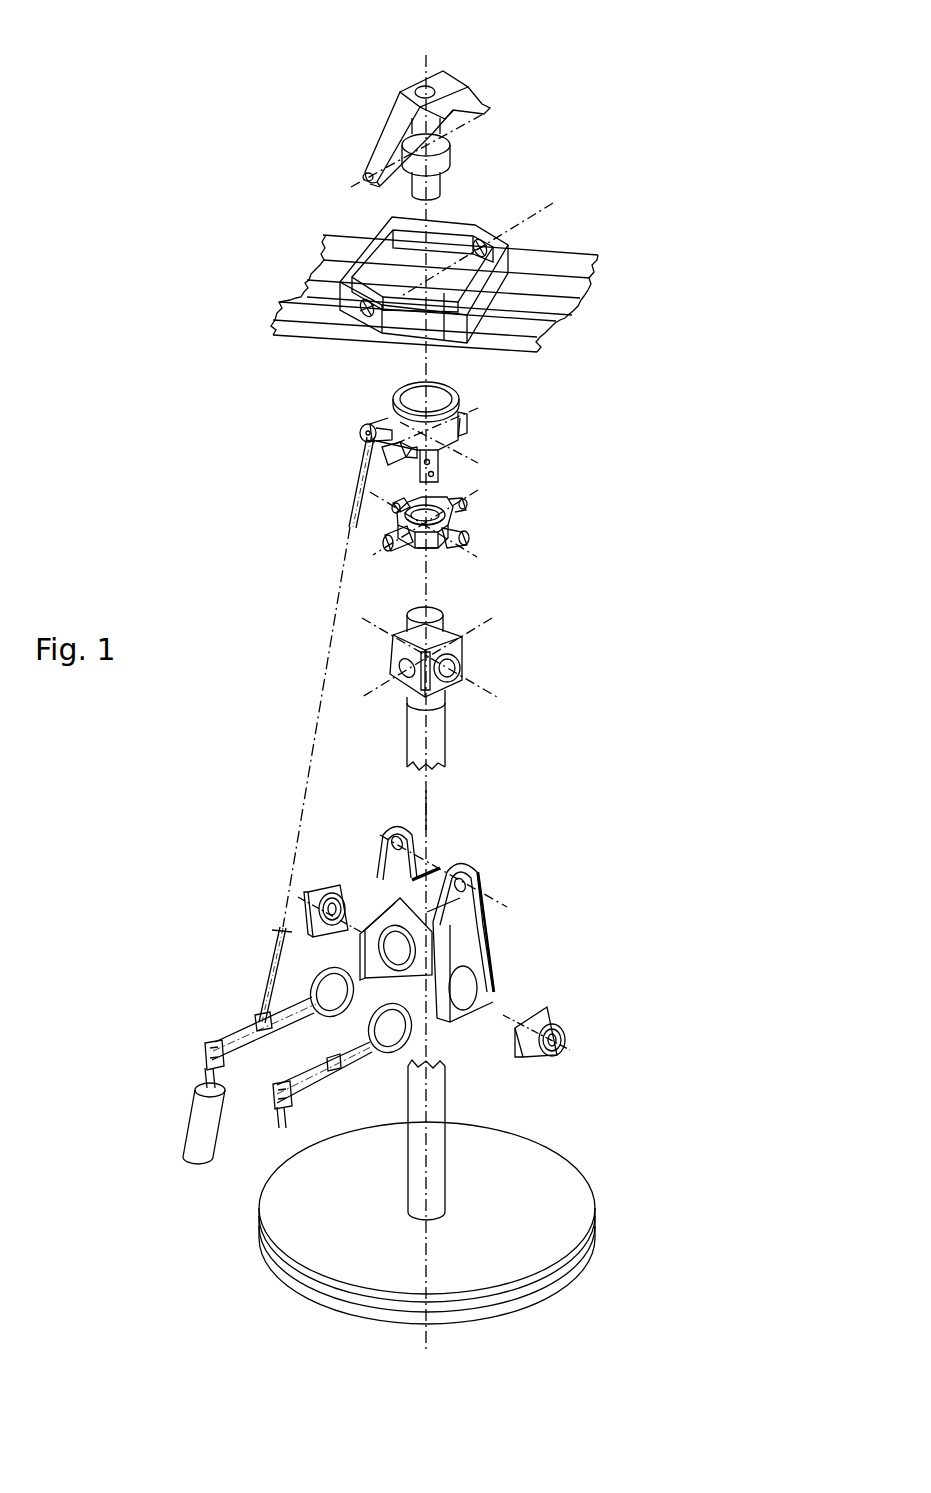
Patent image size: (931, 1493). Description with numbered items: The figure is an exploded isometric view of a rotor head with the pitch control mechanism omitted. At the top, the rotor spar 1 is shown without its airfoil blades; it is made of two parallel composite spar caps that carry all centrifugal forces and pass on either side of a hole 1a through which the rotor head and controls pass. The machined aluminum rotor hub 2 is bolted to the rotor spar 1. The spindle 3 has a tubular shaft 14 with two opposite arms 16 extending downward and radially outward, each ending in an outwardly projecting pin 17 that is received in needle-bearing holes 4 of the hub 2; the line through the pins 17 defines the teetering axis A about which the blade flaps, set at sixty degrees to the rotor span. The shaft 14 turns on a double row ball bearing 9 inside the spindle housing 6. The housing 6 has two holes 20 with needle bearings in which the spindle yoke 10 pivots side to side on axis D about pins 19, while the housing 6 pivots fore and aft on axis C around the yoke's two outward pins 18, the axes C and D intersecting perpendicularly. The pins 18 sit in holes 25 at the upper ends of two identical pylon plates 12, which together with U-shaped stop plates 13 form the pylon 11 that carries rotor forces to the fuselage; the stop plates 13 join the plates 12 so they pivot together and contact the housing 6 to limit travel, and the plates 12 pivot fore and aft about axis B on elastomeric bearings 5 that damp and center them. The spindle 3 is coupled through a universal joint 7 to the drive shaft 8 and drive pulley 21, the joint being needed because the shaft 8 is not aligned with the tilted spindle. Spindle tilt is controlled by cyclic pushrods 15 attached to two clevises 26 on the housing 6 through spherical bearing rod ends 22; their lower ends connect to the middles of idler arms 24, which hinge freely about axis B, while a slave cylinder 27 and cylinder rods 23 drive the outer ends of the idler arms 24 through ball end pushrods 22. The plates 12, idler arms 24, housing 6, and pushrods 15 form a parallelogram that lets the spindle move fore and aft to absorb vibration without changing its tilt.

The rotor spar 1 is at (434, 303).
The hole 1a is at (444, 293).
The rotor hub 2 is at (425, 288).
The spindle 3 is at (411, 112).
The holes 4 is at (363, 313).
The elastomeric bearings 5 is at (307, 892).
The spindle housing 6 is at (387, 426).
The universal joint 7 is at (472, 663).
The drive shaft 8 is at (445, 724).
The double row ball bearing 9 is at (452, 147).
The spindle yoke 10 is at (455, 547).
The pylon 11 is at (461, 910).
The pylon plates 12 is at (378, 845).
The stop plates 13 is at (378, 891).
The tubular shaft 14 is at (410, 180).
The cyclic pushrods 15 is at (348, 524).
The arms 16 is at (468, 86).
The pins 17 is at (363, 167).
The pins 18 is at (440, 550).
The pins 19 is at (466, 514).
The holes 20 is at (385, 465).
The drive pulley 21 is at (533, 1140).
The spherical bearing rod ends 22 is at (362, 430).
The cylinder rods 23 is at (207, 1058).
The idler arm 24 is at (363, 1057).
The holes 25 is at (424, 810).
The clevises 26 is at (373, 497).
The slave cylinder 27 is at (188, 1103).
The teetering axis A is at (470, 124).
The axis B is at (504, 1008).
The axis C is at (463, 458).
The axis D is at (478, 408).